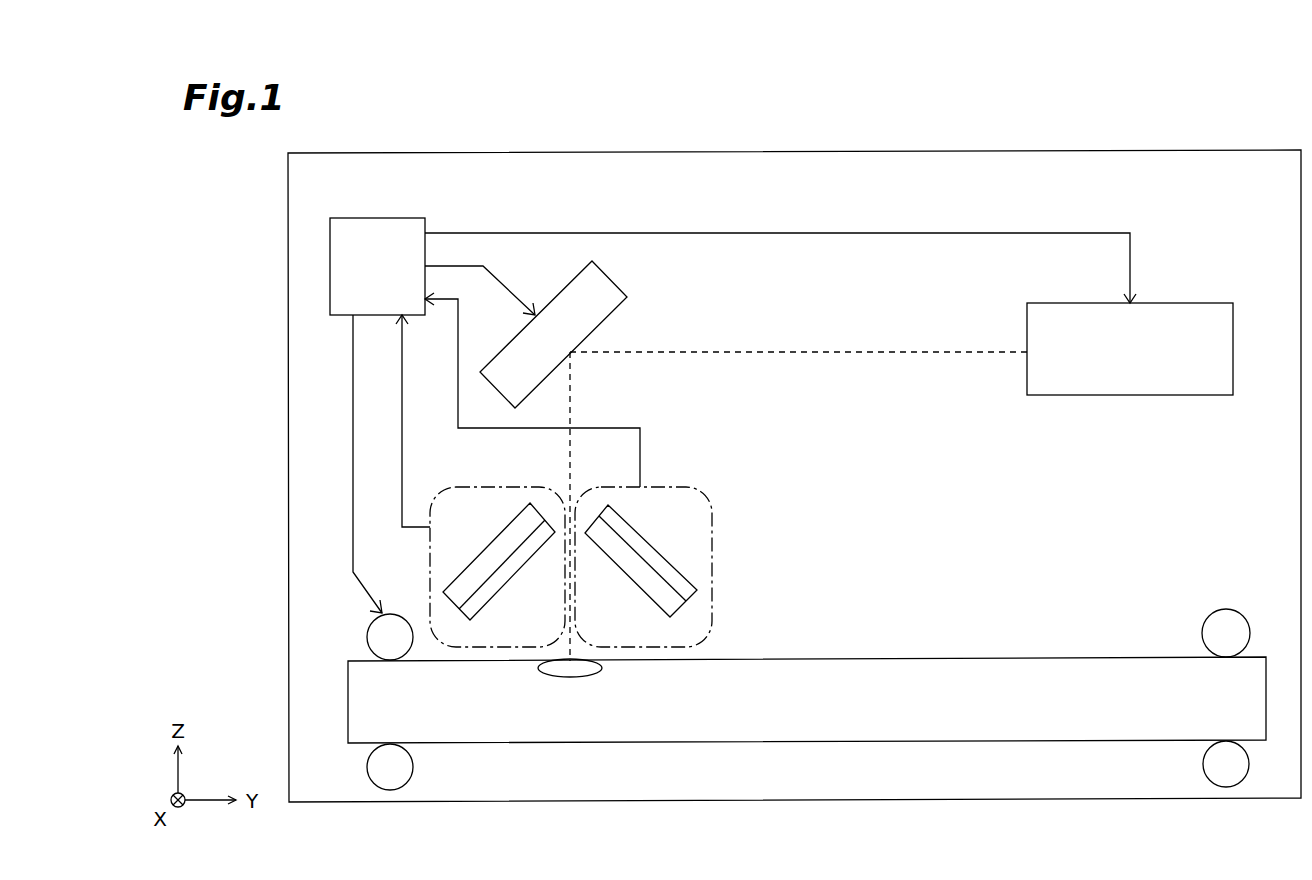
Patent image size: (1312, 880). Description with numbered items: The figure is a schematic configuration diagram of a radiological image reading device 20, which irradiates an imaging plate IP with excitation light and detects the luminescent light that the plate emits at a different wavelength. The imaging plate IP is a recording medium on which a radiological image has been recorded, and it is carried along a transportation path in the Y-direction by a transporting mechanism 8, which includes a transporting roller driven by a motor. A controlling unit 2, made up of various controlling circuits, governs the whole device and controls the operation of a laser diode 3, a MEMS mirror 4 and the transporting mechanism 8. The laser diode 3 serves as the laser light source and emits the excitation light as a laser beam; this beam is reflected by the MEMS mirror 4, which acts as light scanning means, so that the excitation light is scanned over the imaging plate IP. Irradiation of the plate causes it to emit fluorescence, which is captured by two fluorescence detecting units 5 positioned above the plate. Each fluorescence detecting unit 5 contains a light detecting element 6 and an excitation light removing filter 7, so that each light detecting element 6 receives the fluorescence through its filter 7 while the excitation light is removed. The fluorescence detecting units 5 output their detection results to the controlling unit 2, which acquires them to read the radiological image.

The radiological image reading device 20 is at (770, 123).
The controlling unit 2 is at (398, 218).
The laser diode 3 is at (1190, 303).
The MEMS mirror 4 is at (627, 284).
The fluorescence detecting unit 5 is at (460, 487).
The light detecting element 6 is at (488, 545).
The excitation light removing filter 7 is at (505, 584).
The transporting mechanism 8 is at (367, 635).
The imaging plate IP is at (1033, 658).